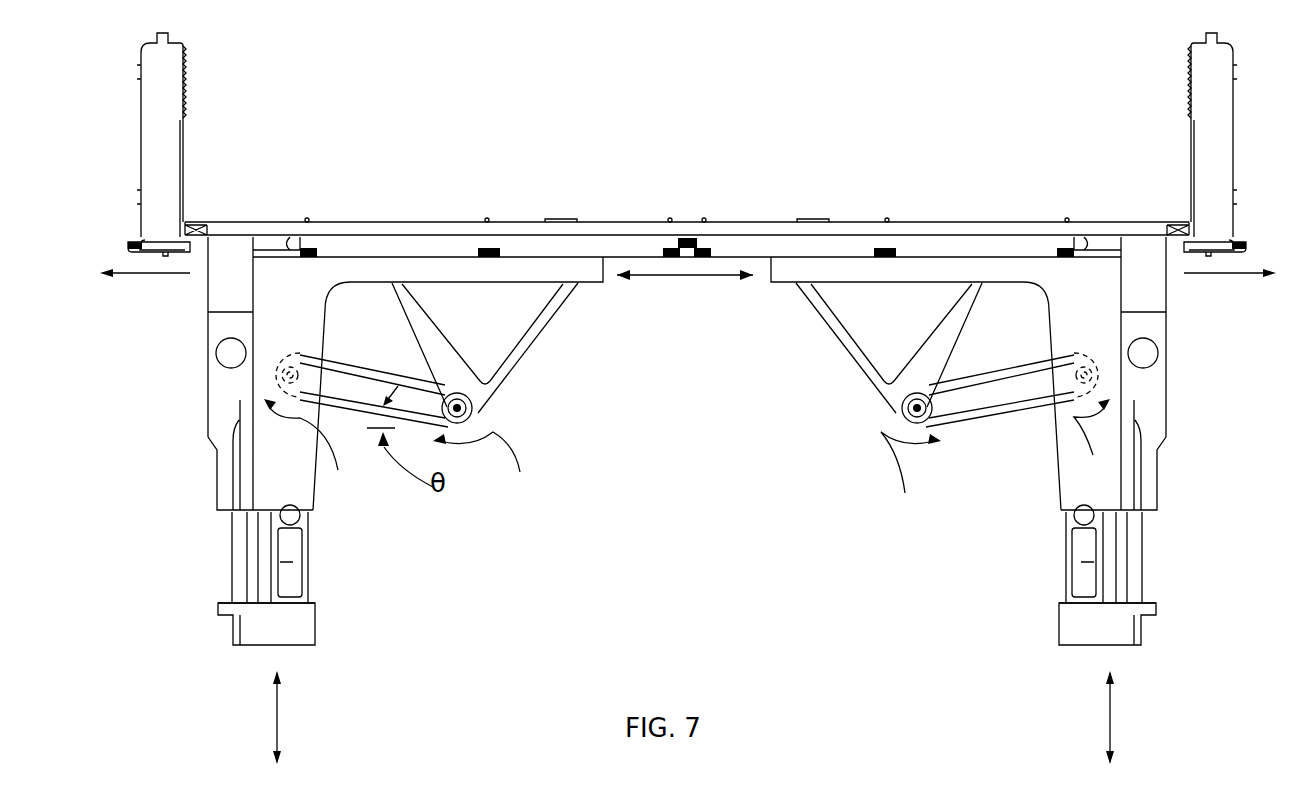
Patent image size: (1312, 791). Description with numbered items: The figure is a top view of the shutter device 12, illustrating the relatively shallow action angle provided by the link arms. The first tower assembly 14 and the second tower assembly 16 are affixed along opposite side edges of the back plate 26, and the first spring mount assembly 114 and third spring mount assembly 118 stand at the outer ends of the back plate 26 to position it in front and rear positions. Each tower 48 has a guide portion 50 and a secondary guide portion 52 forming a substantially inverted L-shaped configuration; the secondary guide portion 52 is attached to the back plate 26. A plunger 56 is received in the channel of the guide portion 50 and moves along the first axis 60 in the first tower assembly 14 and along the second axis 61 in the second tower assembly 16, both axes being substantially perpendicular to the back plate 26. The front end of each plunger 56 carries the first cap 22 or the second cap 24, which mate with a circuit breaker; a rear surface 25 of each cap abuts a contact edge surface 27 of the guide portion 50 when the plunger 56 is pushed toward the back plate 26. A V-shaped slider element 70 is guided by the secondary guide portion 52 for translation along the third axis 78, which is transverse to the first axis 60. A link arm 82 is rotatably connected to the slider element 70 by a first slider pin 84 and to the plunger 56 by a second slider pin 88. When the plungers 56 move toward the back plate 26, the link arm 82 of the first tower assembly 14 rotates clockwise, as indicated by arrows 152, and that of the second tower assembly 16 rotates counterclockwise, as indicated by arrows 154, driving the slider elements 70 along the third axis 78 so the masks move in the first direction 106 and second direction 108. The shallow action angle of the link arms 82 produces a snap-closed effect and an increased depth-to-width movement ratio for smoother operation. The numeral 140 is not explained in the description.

The shutter device 12 is at (872, 49).
The first tower assembly 14 is at (150, 417).
The second tower assembly 16 is at (1187, 398).
The first cap 22 is at (240, 645).
The second cap 24 is at (1125, 646).
The rear surface 25 is at (315, 605).
The back plate 26 is at (521, 228).
The contact edge surface 27 is at (305, 513).
The tower 48 is at (213, 305).
The guide portion 50 is at (258, 480).
The secondary guide portion 52 is at (596, 283).
The plunger 56 is at (232, 588).
The first axis 60 is at (277, 713).
The second axis 61 is at (1110, 728).
The slider element 70 is at (545, 352).
The third axis 78 is at (683, 277).
The link arm 82 is at (363, 368).
The first slider pin 84 is at (473, 410).
The second slider pin 88 is at (283, 356).
The first direction 106 is at (128, 273).
The second direction 108 is at (1234, 273).
The first spring mount assembly 114 is at (163, 76).
The third spring mount assembly 118 is at (1190, 95).
The rail 140 is at (395, 247).
The arrows indicating clockwise rotation 152 is at (406, 447).
The arrows indicating counterclockwise rotation 154 is at (998, 459).